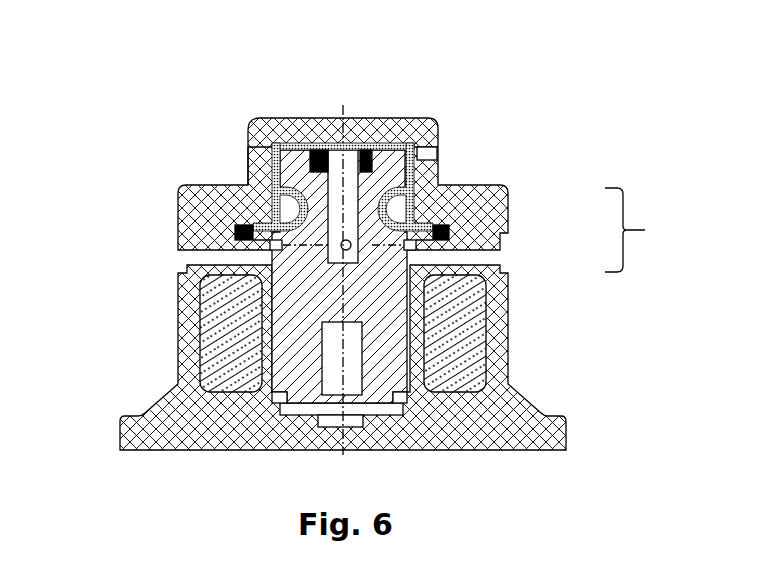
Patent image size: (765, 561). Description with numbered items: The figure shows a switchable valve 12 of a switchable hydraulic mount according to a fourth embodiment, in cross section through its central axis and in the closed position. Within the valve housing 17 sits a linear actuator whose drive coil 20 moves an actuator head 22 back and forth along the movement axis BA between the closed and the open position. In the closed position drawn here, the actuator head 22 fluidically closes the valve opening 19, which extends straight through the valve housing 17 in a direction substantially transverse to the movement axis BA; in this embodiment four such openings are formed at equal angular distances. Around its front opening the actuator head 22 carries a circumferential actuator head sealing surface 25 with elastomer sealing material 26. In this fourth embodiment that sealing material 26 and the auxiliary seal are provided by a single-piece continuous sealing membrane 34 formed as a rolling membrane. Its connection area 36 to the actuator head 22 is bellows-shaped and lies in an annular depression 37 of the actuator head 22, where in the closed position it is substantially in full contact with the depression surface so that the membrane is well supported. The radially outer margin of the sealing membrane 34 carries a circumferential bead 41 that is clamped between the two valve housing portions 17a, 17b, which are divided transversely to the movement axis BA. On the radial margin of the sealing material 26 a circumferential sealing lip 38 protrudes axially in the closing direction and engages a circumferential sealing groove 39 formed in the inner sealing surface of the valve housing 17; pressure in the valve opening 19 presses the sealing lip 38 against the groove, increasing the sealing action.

The switchable valve 12 is at (365, 272).
The valve housing 17 is at (385, 254).
The valve housing portion 17a is at (386, 154).
The valve housing portion 17b is at (493, 300).
The valve opening 19 is at (246, 133).
The drive coil 20 is at (233, 327).
The actuator head 22 is at (380, 332).
The actuator head sealing surface 25 is at (383, 148).
The elastomer sealing material 26 is at (349, 130).
The sealing membrane 34 is at (412, 220).
The connection area 36 is at (282, 197).
The annular depression 37 is at (286, 208).
The sealing lip 38 is at (418, 148).
The sealing groove 39 is at (407, 148).
The circumferential bead 41 is at (247, 234).
The movement axis BA is at (333, 367).